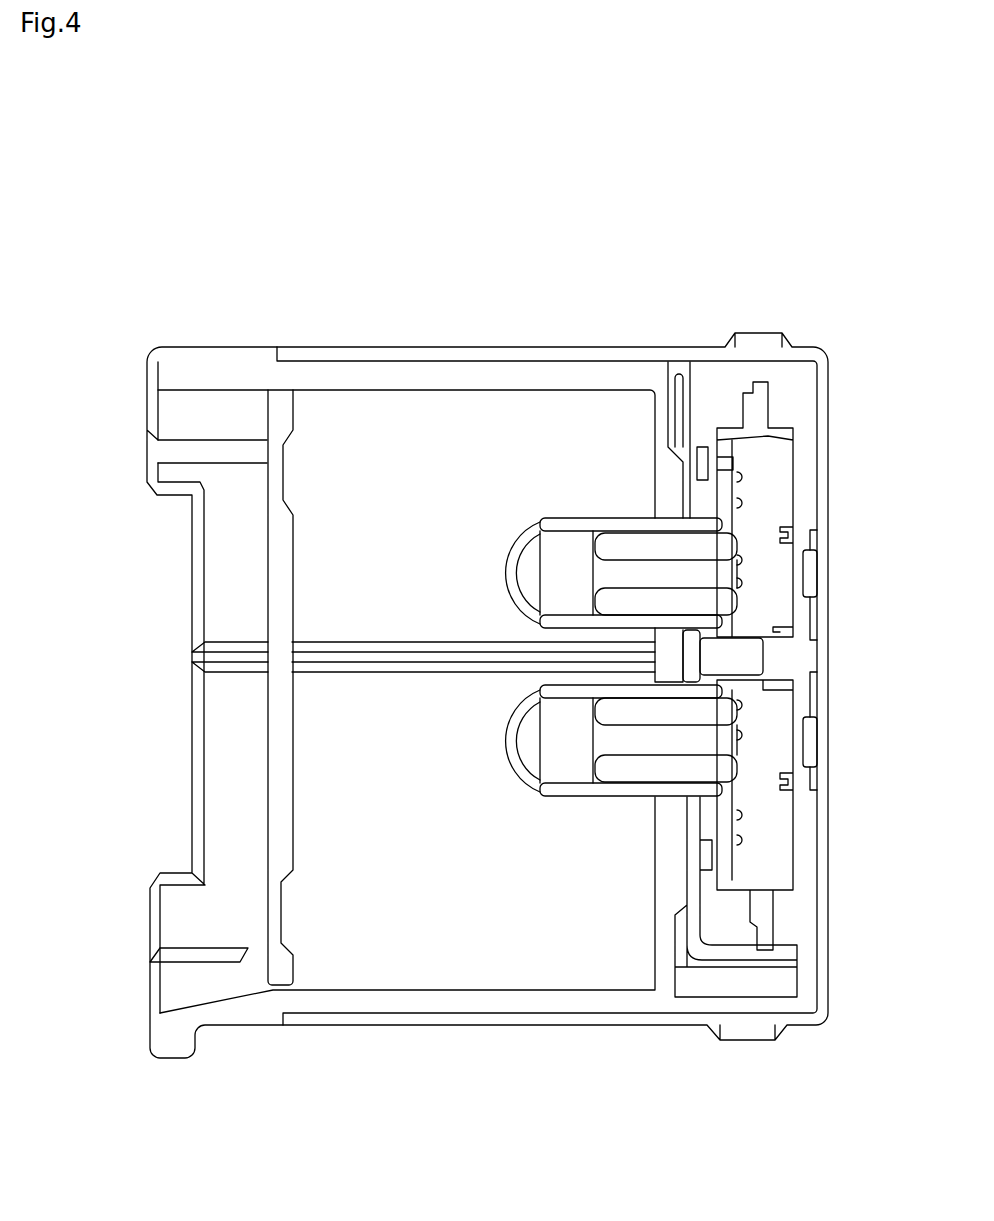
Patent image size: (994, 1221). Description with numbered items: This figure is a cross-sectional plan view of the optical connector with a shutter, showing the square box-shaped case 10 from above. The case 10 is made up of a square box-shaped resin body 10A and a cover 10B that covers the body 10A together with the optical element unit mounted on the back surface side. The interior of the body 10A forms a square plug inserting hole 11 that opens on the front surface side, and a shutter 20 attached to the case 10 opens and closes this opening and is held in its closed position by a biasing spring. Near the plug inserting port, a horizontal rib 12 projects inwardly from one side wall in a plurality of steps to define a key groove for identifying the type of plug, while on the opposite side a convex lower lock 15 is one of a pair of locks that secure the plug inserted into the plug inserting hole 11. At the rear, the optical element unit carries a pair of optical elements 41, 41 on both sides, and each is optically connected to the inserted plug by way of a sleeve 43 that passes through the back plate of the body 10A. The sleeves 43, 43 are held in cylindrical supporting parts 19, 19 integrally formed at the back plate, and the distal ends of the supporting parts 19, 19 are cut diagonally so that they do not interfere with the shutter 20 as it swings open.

The case 10 is at (347, 333).
The body 10A is at (415, 347).
The cover 10B is at (522, 347).
The plug inserting hole 11 is at (387, 883).
The horizontal rib 12 is at (203, 428).
The lower lock 15 is at (202, 948).
The cylindrical supporting part 19 is at (567, 516).
The shutter 20 is at (275, 580).
The optical element 41 is at (783, 473).
The sleeve 43 is at (625, 543).